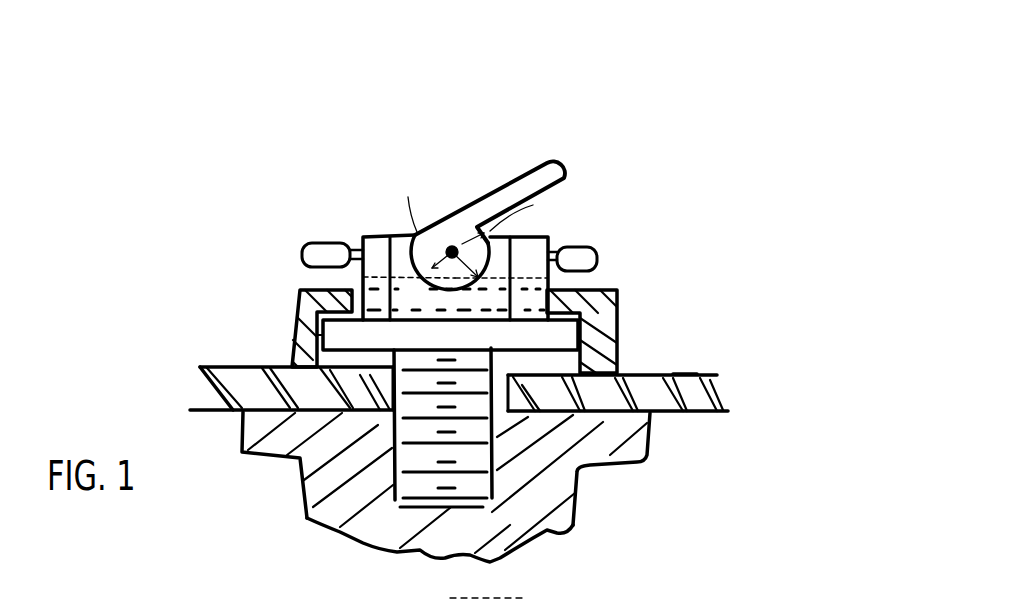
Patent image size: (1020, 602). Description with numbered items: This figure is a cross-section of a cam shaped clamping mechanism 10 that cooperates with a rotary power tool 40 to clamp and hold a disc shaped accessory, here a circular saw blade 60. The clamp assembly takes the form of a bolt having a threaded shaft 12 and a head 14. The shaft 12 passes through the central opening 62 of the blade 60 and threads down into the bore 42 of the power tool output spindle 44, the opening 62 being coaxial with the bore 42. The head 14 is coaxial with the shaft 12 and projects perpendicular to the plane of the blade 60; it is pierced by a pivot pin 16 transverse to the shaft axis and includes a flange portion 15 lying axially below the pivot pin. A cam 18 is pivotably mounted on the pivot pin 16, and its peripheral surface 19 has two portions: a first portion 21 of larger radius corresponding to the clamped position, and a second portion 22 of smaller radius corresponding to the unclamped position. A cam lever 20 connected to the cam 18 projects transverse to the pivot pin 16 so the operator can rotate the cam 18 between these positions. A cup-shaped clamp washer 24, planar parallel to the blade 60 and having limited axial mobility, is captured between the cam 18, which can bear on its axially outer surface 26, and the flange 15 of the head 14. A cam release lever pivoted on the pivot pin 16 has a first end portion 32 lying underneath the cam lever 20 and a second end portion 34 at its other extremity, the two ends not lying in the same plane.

The clamping mechanism 10 is at (617, 155).
The threaded shaft 12 is at (408, 480).
The head 14 is at (377, 233).
The flange portion 15 is at (347, 337).
The pivot pin 16 is at (452, 245).
The cam 18 is at (490, 233).
The peripheral surface 19 is at (512, 237).
The cam lever 20 is at (543, 158).
The first portion 21 is at (550, 279).
The second portion 22 is at (363, 277).
The clamp washer 24 is at (613, 327).
The axially outer surface 26 is at (323, 290).
The first end portion 32 is at (597, 257).
The second end portion 34 is at (318, 253).
The rotary power tool 40 is at (640, 547).
The bore 42 is at (493, 447).
The output spindle 44 is at (653, 447).
The circular saw blade 60 is at (717, 392).
The central opening 62 is at (510, 372).